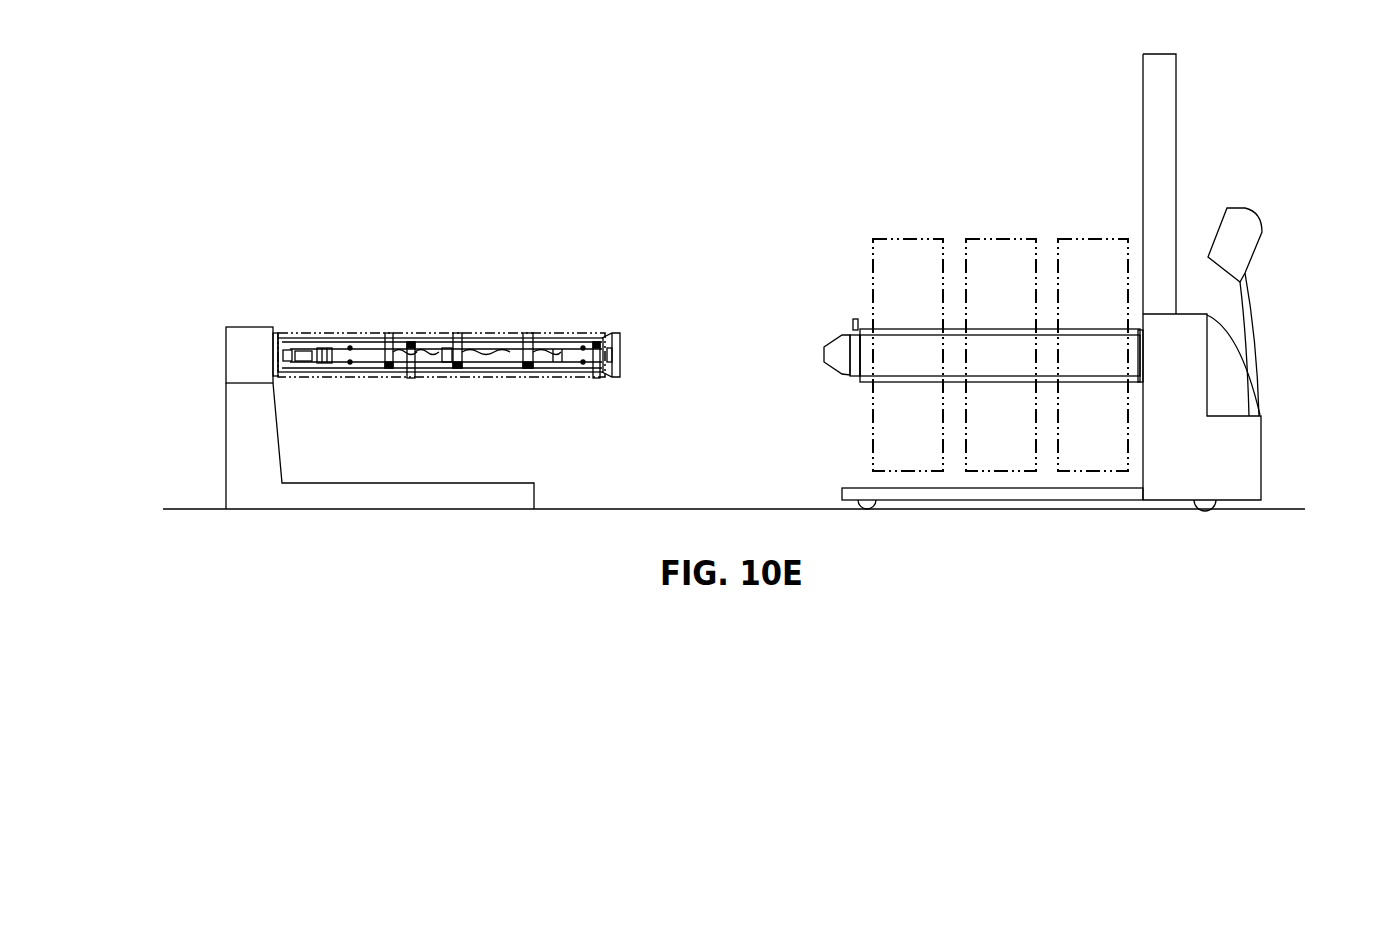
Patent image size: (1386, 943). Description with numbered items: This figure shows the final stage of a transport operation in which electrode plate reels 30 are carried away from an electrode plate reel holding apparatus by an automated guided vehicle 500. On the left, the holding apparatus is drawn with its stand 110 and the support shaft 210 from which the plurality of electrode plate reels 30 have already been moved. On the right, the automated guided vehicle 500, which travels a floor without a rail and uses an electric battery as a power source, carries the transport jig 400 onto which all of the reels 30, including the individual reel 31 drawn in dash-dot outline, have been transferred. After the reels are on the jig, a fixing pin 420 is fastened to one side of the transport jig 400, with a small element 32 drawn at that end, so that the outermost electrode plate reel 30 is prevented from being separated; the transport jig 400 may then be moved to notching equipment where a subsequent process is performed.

The stand 110 is at (204, 385).
The support shaft 210 is at (335, 332).
The electrode plate reel 30 is at (939, 301).
The pallet 31 is at (905, 237).
The stopper 32 is at (866, 327).
The transport jig 400 is at (1060, 350).
The fixing pin 420 is at (853, 328).
The automated guided vehicle 500 is at (1230, 455).